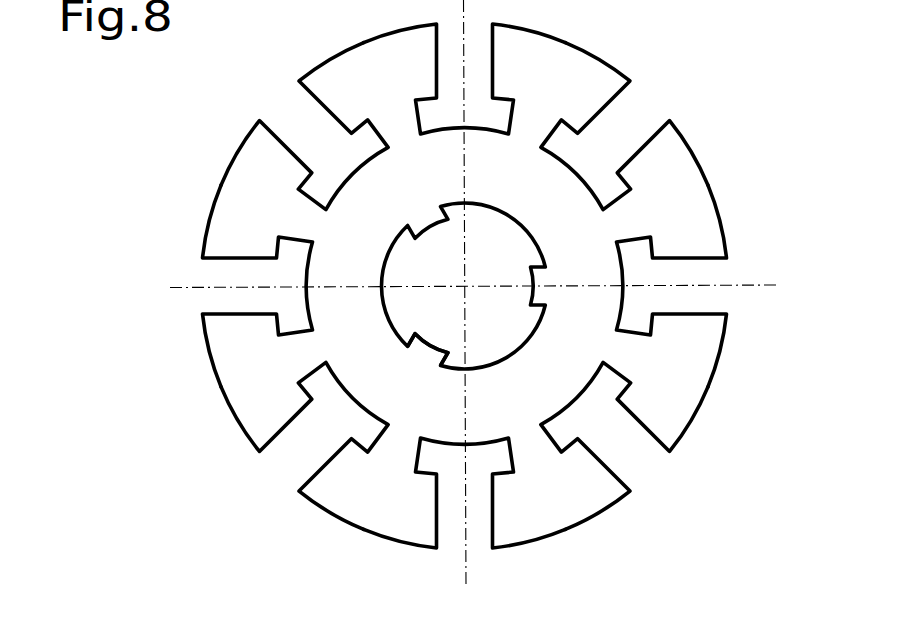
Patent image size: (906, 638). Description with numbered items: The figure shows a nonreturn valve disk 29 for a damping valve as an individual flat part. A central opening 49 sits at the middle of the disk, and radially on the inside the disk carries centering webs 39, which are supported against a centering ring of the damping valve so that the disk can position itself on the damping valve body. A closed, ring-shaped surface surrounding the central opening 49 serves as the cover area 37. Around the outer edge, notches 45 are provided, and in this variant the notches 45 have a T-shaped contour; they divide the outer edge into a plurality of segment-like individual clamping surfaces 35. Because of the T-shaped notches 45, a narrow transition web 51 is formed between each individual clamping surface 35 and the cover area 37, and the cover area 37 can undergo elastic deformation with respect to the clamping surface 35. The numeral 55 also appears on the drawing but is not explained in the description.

The nonreturn valve disk 29 is at (511, 331).
The clamping surface 35 is at (685, 385).
The cover area 37 is at (582, 307).
The centering webs 39 is at (437, 343).
The notches 45 is at (628, 443).
The central opening 49 is at (512, 277).
The transition web 51 is at (538, 445).
The slot opening 55 is at (318, 480).